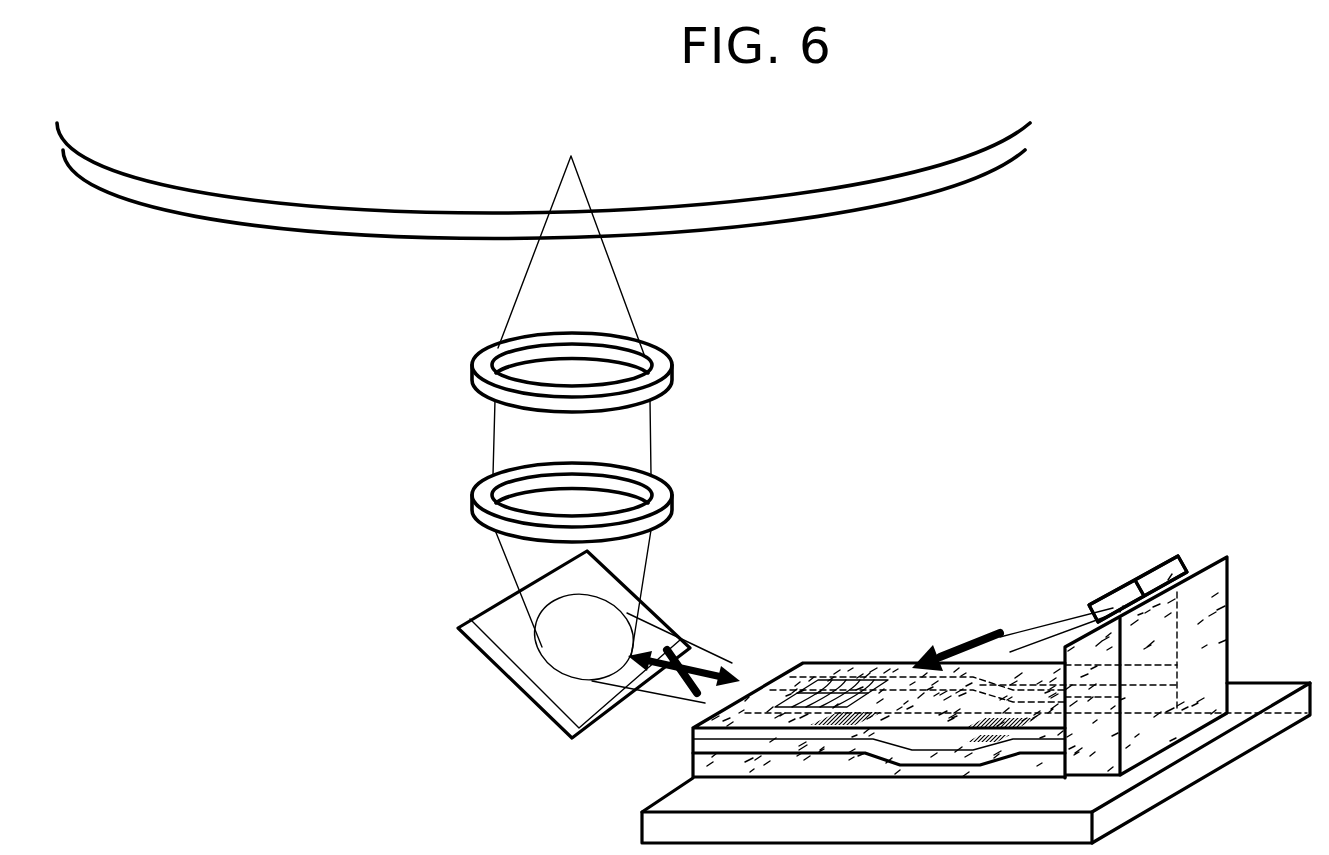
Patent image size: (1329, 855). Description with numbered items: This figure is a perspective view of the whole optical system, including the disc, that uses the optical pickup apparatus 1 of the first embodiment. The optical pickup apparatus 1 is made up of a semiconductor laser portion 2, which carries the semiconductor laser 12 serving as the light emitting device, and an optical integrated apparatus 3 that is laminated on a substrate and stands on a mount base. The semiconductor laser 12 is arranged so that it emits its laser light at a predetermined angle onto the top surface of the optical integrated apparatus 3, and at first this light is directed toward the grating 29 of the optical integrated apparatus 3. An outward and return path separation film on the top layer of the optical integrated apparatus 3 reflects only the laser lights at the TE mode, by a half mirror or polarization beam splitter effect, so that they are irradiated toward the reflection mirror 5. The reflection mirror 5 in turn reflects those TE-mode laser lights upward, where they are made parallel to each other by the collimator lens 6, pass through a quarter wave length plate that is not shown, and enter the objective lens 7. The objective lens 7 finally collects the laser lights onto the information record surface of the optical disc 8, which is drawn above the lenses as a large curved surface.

The optical pickup apparatus 1 is at (1176, 487).
The semiconductor laser portion 2 is at (1155, 550).
The optical integrated apparatus 3 is at (1066, 608).
The reflection mirror 5 is at (502, 658).
The collimator lens 6 is at (487, 501).
The objective lens 7 is at (483, 368).
The optical disc 8 is at (423, 227).
The semiconductor laser 12 is at (1184, 559).
The grating 29 is at (843, 680).